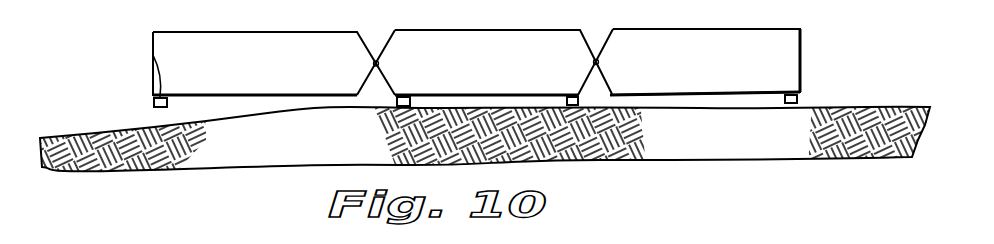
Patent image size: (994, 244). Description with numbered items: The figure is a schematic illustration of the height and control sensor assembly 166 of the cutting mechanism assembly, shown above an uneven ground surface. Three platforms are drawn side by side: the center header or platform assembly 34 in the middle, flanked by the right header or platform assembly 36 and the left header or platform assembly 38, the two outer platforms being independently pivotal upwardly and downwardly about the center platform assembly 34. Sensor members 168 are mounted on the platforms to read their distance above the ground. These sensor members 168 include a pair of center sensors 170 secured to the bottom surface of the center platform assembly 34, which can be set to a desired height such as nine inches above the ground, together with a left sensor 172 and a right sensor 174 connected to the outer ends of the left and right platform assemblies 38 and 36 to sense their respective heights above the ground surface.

The center header or platform assembly 34 is at (482, 33).
The right header or platform assembly 36 is at (217, 40).
The left header or platform assembly 38 is at (688, 38).
The height and control sensor assembly 166 is at (130, 66).
The sensor members 168 is at (158, 108).
The center sensors 170 is at (570, 97).
The left sensor 172 is at (153, 55).
The right sensor 174 is at (792, 95).